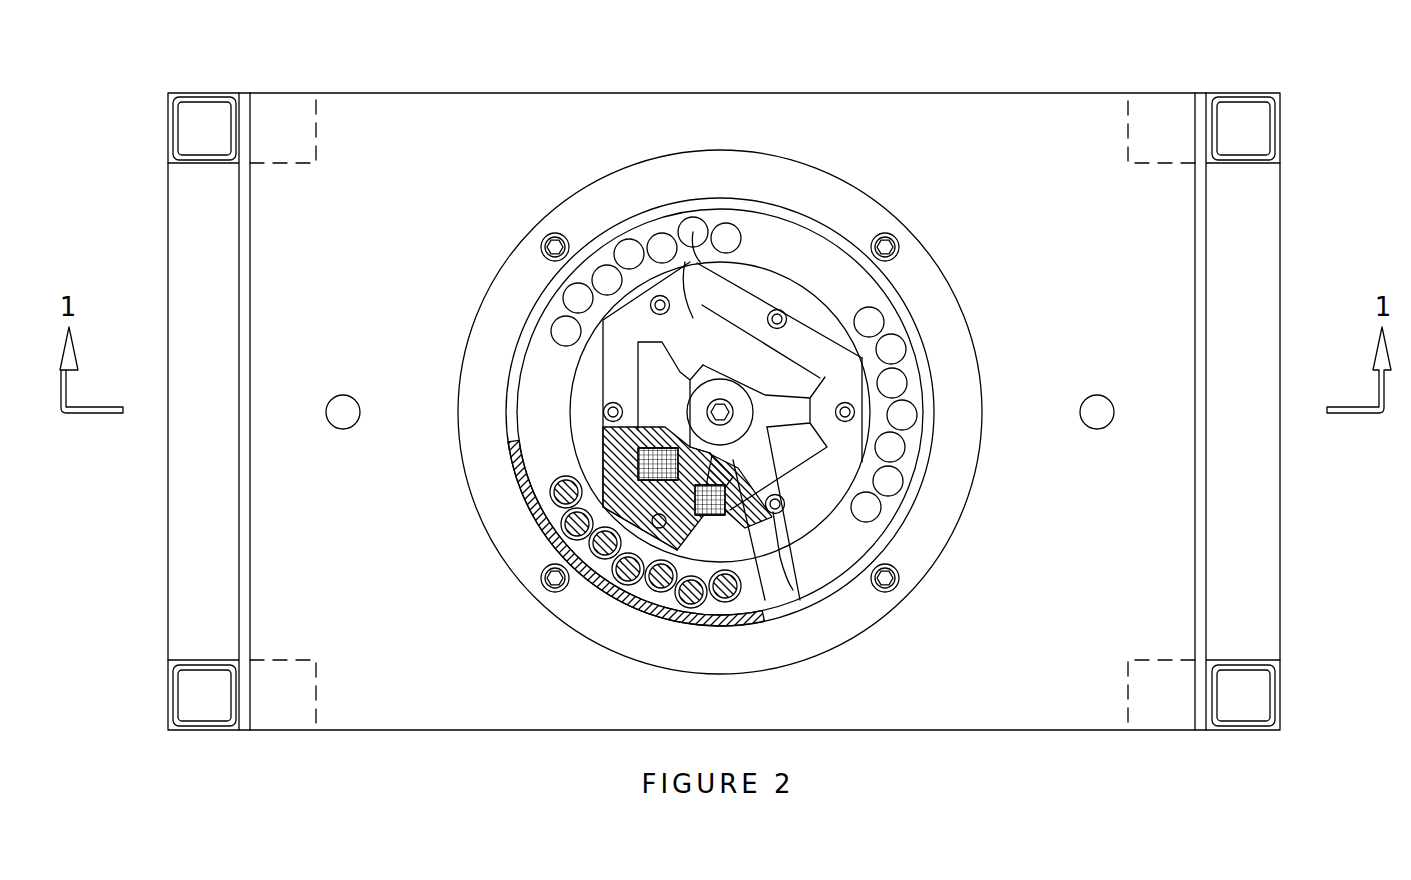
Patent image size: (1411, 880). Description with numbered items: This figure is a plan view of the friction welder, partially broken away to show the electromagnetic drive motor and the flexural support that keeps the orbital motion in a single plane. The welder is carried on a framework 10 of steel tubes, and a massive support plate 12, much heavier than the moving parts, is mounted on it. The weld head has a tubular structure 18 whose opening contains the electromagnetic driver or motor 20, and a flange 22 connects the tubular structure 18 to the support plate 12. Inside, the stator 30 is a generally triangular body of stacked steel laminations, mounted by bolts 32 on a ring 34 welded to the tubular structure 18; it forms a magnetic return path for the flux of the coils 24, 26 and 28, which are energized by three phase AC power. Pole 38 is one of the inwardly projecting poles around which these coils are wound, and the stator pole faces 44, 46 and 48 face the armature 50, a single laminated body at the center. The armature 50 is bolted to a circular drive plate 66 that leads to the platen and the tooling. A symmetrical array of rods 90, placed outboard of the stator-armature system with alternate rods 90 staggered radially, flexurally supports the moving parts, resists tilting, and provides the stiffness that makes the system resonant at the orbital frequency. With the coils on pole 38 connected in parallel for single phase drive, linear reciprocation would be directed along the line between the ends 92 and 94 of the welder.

The framework 10 is at (1283, 215).
The support plate 12 is at (962, 105).
The tubular structure 18 is at (908, 326).
The electromagnetic driver or motor 20 is at (836, 305).
The flange 22 is at (962, 530).
The coil 24 is at (700, 262).
The coil 26 is at (622, 486).
The coil 28 is at (762, 616).
The stator 30 is at (606, 458).
The bolts 32 is at (652, 298).
The ring 34 is at (820, 512).
The pole 38 is at (640, 428).
The stator pole face 44 is at (795, 592).
The stator pole face 46 is at (850, 316).
The stator pole face 48 is at (636, 345).
The armature 50 is at (802, 397).
The drive plate 66 is at (862, 535).
The rods 90 is at (660, 233).
The end of the welder 92 is at (1282, 518).
The end of the welder 94 is at (168, 518).